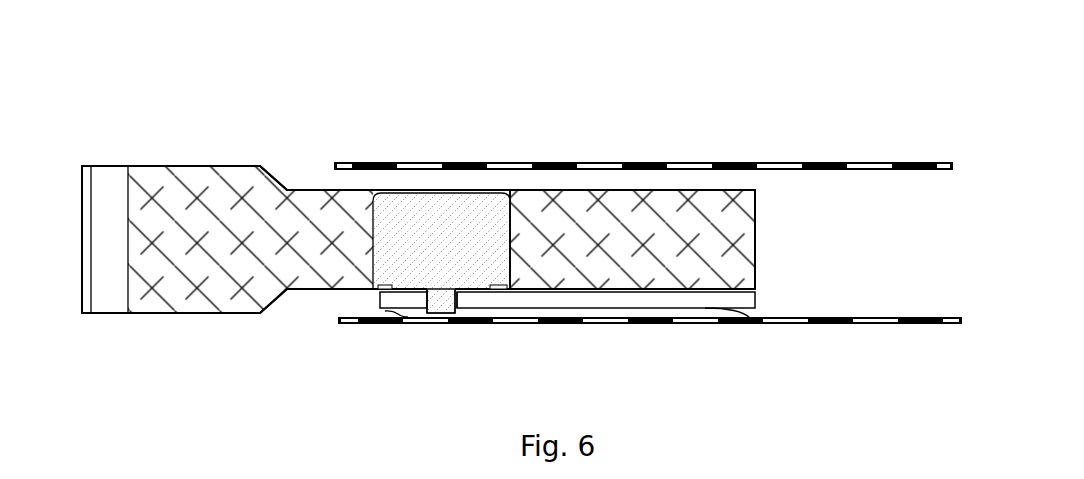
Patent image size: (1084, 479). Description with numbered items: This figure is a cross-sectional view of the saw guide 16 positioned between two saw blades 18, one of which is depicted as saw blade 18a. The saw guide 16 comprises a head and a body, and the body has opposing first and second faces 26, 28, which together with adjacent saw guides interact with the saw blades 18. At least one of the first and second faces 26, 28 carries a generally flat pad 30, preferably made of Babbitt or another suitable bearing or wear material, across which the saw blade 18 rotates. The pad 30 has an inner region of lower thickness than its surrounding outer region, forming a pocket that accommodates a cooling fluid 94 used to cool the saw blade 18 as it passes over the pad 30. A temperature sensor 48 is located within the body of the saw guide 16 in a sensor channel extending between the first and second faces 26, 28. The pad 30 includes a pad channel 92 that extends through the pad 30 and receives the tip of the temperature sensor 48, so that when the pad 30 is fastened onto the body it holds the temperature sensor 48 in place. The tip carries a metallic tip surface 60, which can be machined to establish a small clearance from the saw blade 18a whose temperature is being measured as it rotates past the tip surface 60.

The saw guide 16 is at (176, 138).
The saw blade 18 is at (800, 162).
The saw blade 18a is at (802, 325).
The first face 26 is at (314, 289).
The second face 28 is at (315, 190).
The pad 30 is at (607, 298).
The temperature sensor 48 is at (453, 244).
The tip surface 60 is at (445, 313).
The pad channel 92 is at (458, 298).
The cooling fluid 94 is at (697, 312).